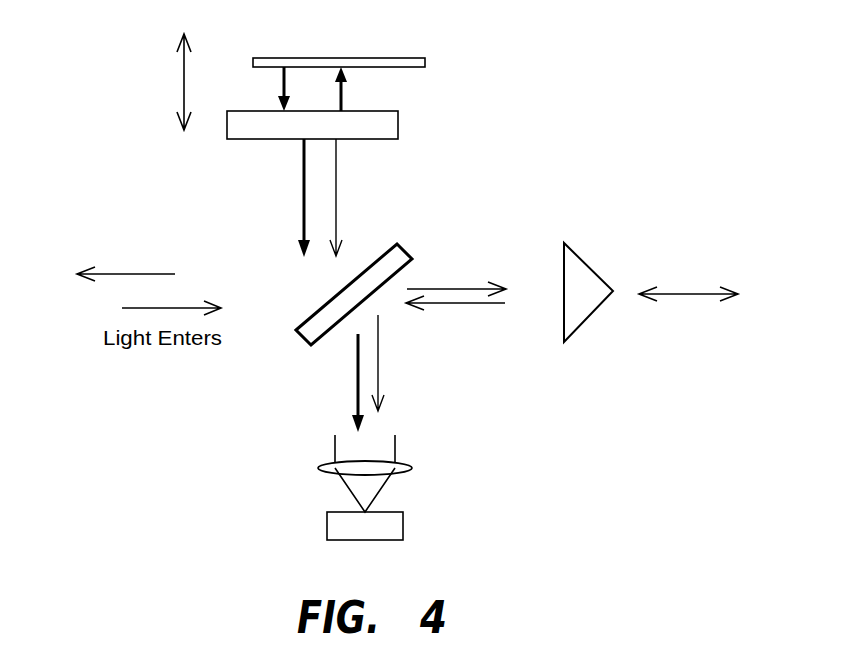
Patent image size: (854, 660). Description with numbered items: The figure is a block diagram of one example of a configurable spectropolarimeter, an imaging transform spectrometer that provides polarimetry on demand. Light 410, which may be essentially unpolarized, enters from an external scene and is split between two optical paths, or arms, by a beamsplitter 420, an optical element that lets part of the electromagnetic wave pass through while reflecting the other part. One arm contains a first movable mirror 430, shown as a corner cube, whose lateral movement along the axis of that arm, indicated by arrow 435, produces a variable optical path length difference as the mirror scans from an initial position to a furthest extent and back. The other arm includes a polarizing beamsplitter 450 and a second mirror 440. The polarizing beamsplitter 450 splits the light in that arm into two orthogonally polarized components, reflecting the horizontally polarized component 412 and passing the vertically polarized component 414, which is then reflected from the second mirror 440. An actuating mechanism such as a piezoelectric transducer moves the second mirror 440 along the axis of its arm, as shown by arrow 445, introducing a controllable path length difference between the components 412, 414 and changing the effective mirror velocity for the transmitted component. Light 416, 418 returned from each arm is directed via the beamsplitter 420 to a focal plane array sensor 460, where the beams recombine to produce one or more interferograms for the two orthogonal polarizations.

The light 410 is at (135, 274).
The horizontally polarized component 412 is at (336, 188).
The vertically polarized component 414 is at (343, 98).
The returned light 416 is at (380, 365).
The returned light 418 is at (356, 385).
The beamsplitter 420 is at (400, 245).
The first movable mirror 430 is at (597, 270).
The arrow 435 is at (687, 295).
The second mirror 440 is at (425, 57).
The arrow 445 is at (183, 84).
The polarizing beamsplitter 450 is at (398, 128).
The focal plane array sensor 460 is at (403, 512).